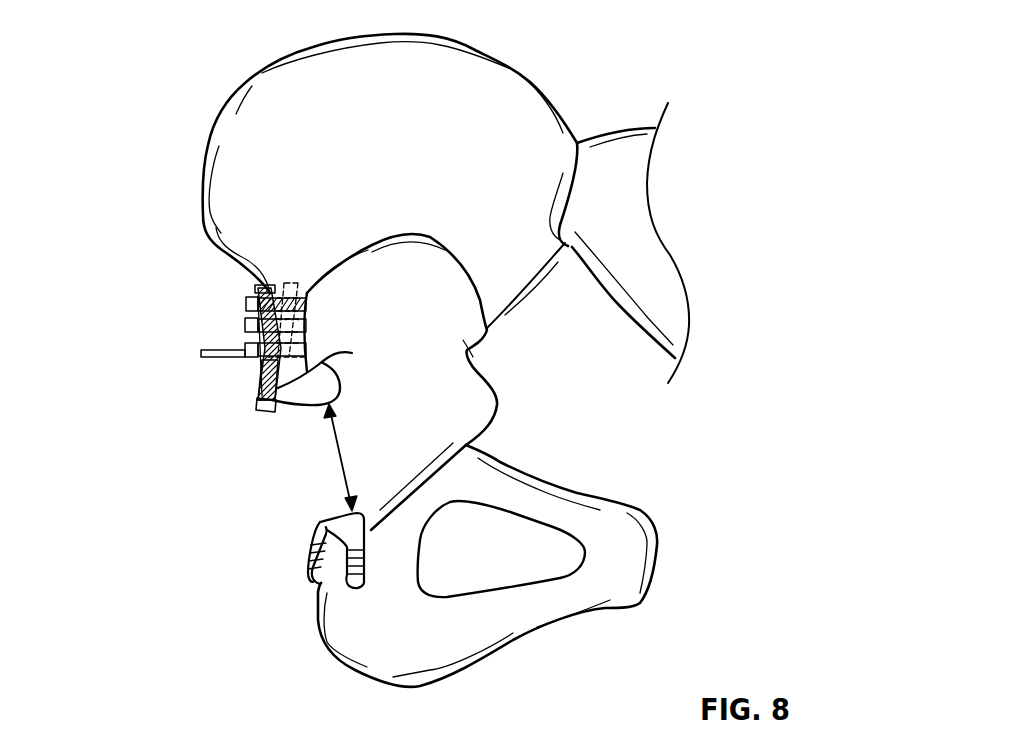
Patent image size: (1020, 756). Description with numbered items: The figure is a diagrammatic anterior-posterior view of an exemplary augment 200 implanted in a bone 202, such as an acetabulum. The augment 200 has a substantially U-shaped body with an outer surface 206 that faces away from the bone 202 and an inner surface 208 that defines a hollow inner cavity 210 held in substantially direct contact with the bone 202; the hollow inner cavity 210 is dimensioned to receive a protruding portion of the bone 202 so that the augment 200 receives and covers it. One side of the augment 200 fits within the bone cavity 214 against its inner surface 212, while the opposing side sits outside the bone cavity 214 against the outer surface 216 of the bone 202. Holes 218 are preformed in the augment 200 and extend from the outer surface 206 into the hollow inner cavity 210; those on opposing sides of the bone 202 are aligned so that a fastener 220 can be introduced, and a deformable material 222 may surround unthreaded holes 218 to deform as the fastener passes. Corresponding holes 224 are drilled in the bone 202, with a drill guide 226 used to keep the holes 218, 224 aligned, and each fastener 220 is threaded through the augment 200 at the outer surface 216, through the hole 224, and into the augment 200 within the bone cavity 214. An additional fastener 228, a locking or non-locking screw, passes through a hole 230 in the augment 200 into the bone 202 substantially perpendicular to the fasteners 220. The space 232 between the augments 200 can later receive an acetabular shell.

The augment 200 is at (243, 364).
The bone 202 is at (501, 55).
The outer surface 206 is at (290, 408).
The inner surface 208 is at (257, 287).
The hollow inner cavity 210 is at (283, 289).
The inner surface of the bone cavity 212 is at (370, 253).
The bone cavity 214 is at (408, 274).
The outer surface of the bone 216 is at (347, 585).
The holes 218 is at (320, 523).
The fastener 220 is at (245, 303).
The deformable material 222 is at (252, 405).
The holes in the bone 224 is at (245, 325).
The drill guide 226 is at (205, 358).
The additional fastener 228 is at (256, 412).
The hole 230 is at (352, 353).
The space 232 is at (343, 443).